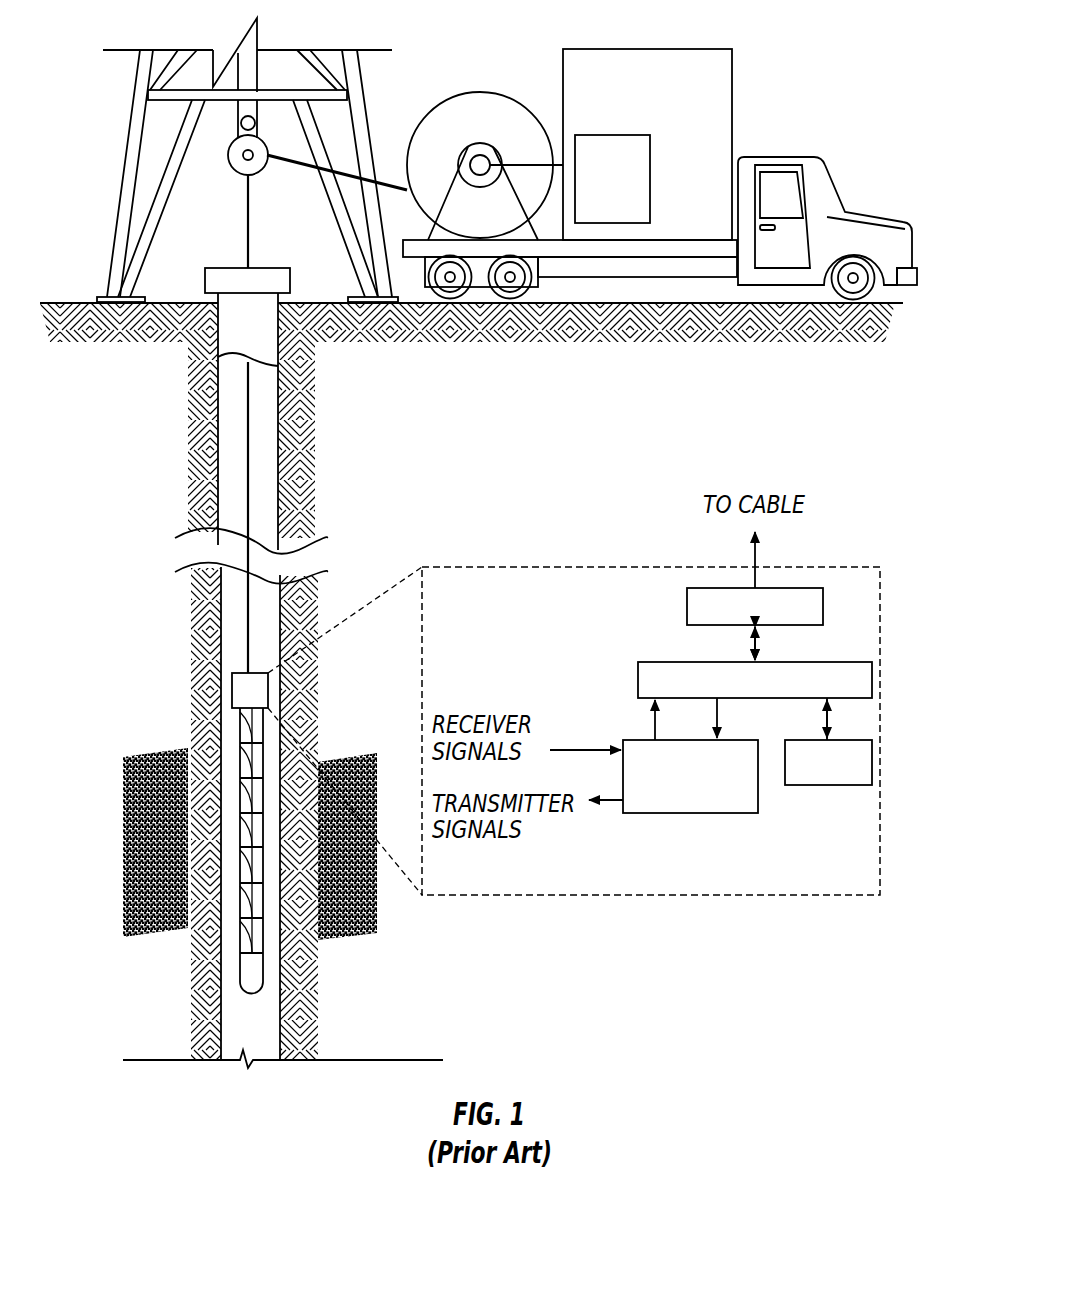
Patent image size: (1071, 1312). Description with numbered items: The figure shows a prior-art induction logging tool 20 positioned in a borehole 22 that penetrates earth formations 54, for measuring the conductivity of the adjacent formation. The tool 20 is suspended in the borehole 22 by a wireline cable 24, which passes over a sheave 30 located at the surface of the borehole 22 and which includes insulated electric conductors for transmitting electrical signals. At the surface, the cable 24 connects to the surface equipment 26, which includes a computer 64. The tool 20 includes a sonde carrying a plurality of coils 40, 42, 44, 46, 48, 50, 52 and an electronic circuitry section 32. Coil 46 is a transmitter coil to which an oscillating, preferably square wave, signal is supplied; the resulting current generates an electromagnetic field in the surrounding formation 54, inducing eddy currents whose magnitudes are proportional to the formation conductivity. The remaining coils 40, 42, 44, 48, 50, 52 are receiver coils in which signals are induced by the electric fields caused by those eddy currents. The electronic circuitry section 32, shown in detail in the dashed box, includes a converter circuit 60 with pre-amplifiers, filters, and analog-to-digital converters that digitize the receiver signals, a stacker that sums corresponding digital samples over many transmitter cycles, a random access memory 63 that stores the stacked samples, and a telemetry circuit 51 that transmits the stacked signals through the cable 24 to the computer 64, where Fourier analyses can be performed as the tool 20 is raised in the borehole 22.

The induction logging tool 20 is at (235, 665).
The borehole 22 is at (237, 620).
The wireline cable 24 is at (253, 250).
The surface equipment 26 is at (712, 49).
The sheave 30 is at (453, 97).
The electronic circuitry section 32 is at (262, 693).
The receiver coil 40 is at (240, 712).
The receiver coil 42 is at (240, 746).
The receiver coil 44 is at (240, 781).
The transmitter coil 46 is at (240, 816).
The receiver coil 48 is at (240, 850).
The receiver coil 50 is at (240, 886).
The receiver coil 52 is at (240, 921).
The telemetry unit 51 is at (687, 607).
The earth formation 54 is at (358, 606).
The converter circuit 60 is at (642, 813).
The random access memory (RAM) 63 is at (835, 785).
The computer 64 is at (652, 155).